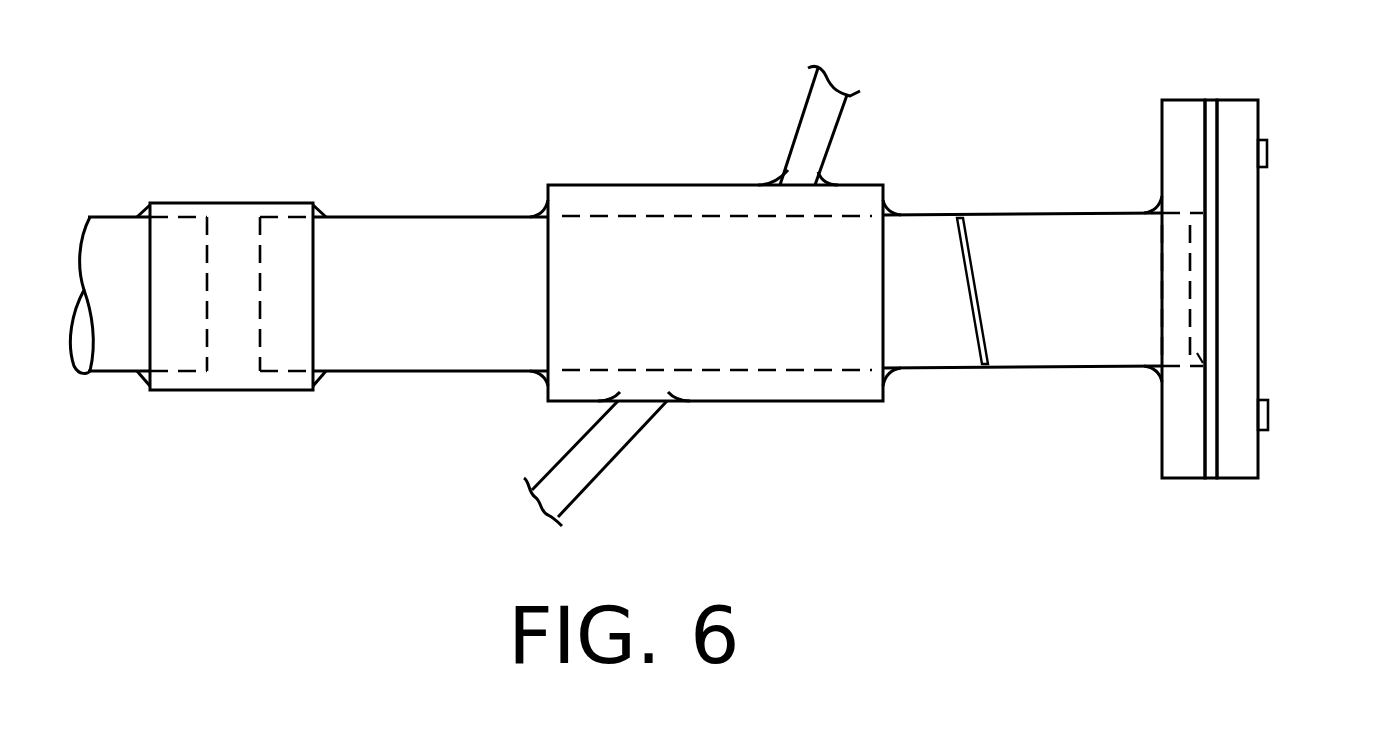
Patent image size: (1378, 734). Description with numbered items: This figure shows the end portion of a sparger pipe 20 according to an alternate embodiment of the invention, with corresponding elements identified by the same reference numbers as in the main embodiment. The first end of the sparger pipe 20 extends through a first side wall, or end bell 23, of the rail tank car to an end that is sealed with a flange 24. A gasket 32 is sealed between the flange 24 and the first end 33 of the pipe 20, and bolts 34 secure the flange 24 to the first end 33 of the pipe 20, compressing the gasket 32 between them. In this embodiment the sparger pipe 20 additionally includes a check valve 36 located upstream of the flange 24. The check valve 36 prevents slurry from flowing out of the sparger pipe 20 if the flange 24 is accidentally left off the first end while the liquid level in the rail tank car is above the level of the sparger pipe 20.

The sparger pipe 20 is at (250, 203).
The end bell 23 is at (802, 118).
The flange 24 is at (1243, 100).
The gasket 32 is at (1215, 88).
The first end 33 is at (1178, 100).
The bolts 34 is at (1290, 143).
The check valve 36 is at (970, 298).